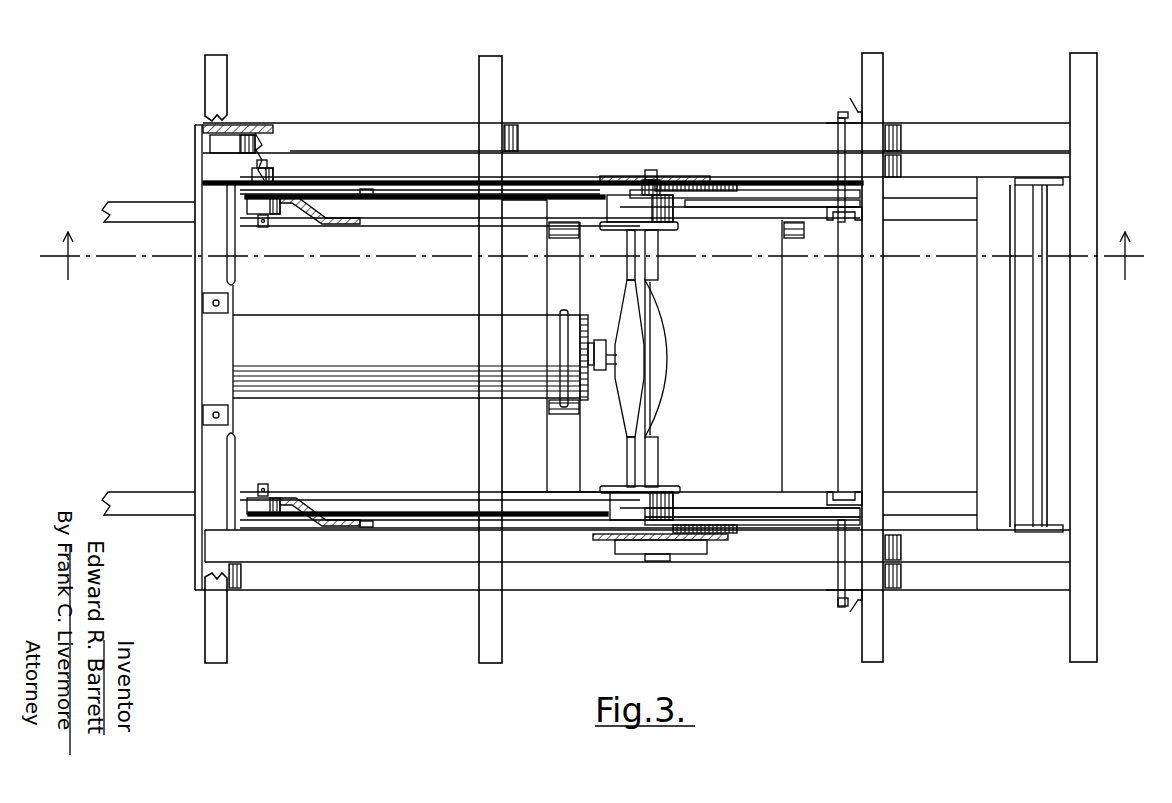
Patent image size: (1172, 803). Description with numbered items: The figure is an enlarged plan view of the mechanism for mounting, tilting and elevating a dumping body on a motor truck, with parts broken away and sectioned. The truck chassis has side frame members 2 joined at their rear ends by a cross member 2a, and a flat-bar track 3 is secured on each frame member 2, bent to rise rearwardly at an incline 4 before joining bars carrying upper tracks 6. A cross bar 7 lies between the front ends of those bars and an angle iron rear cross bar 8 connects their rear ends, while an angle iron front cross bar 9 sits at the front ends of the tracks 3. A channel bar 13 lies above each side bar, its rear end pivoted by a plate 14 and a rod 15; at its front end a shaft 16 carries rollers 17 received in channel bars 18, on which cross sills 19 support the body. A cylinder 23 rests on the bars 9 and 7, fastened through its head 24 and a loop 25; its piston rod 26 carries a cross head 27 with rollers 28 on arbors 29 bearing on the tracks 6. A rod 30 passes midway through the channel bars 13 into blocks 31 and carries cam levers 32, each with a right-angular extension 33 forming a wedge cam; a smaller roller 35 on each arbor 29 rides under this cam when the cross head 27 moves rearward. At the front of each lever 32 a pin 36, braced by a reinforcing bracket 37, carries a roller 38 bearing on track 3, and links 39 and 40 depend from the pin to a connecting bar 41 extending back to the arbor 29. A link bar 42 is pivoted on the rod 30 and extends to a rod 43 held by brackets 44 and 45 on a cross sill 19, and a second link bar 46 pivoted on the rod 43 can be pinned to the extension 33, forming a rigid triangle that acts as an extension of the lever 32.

The chassis side frame member 2 is at (110, 208).
The cross member 2a is at (790, 332).
The track 3 is at (392, 218).
The inclined portion of track 4 is at (592, 256).
The track 6 is at (742, 210).
The cross bar 7 is at (558, 435).
The rear cross bar 8 is at (985, 428).
The front cross bar 9 is at (212, 432).
The channel bar 13 is at (770, 160).
The plate 14 is at (1055, 184).
The rod 15 is at (1036, 378).
The rod or shaft 16 is at (232, 268).
The roller 17 is at (240, 140).
The channel bar 18 is at (575, 133).
The cross sill 19 is at (489, 416).
The cylinder 23 is at (382, 378).
The head 24 is at (210, 412).
The loop 25 is at (563, 328).
The piston rod 26 is at (606, 378).
The cross head 27 is at (657, 360).
The roller 28 is at (665, 222).
The arbor 29 is at (646, 170).
The rod 30 is at (660, 458).
The block 31 is at (665, 556).
The cam lever 32 is at (456, 198).
The extension 33 is at (722, 183).
The second smaller roller 35 is at (662, 182).
The pin 36 is at (270, 226).
The reinforcing bracket 37 is at (312, 210).
The roller 38 is at (258, 216).
The link 39 is at (250, 196).
The link 40 is at (270, 176).
The connecting bar 41 is at (405, 178).
The link bar 42 is at (778, 208).
The rod 43 is at (846, 140).
The bracket 44 is at (834, 216).
The bracket 45 is at (848, 108).
The second link bar 46 is at (770, 193).